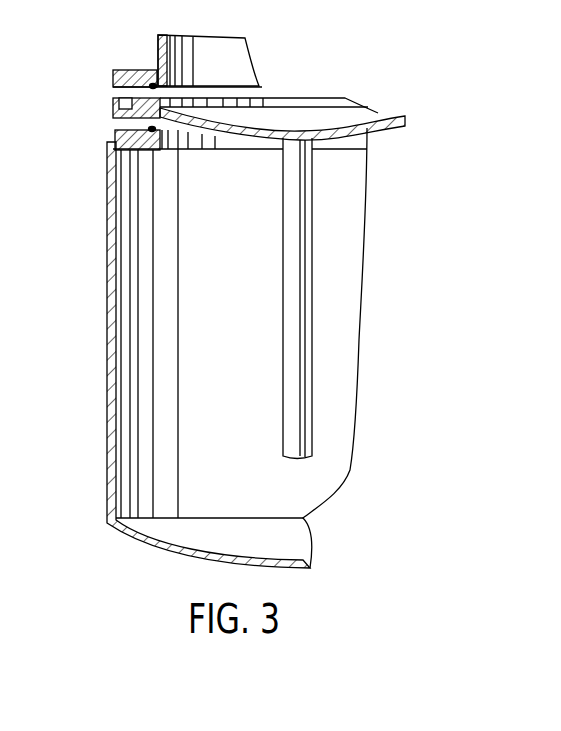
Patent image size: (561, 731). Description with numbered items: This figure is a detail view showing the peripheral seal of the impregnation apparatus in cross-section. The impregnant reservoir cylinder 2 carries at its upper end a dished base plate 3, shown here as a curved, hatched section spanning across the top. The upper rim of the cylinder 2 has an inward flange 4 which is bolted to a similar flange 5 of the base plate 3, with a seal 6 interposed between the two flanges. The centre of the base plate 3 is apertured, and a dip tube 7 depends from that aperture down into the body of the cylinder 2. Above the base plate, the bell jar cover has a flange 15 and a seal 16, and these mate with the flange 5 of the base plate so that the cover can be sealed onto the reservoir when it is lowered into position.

The impregnant reservoir cylinder 2 is at (111, 432).
The dished base plate 3 is at (365, 121).
The inward flange 4 is at (148, 142).
The flange 5 is at (113, 106).
The seal 6 is at (148, 129).
The dip tube 7 is at (284, 294).
The flange 15 is at (136, 70).
The seal 16 is at (150, 89).